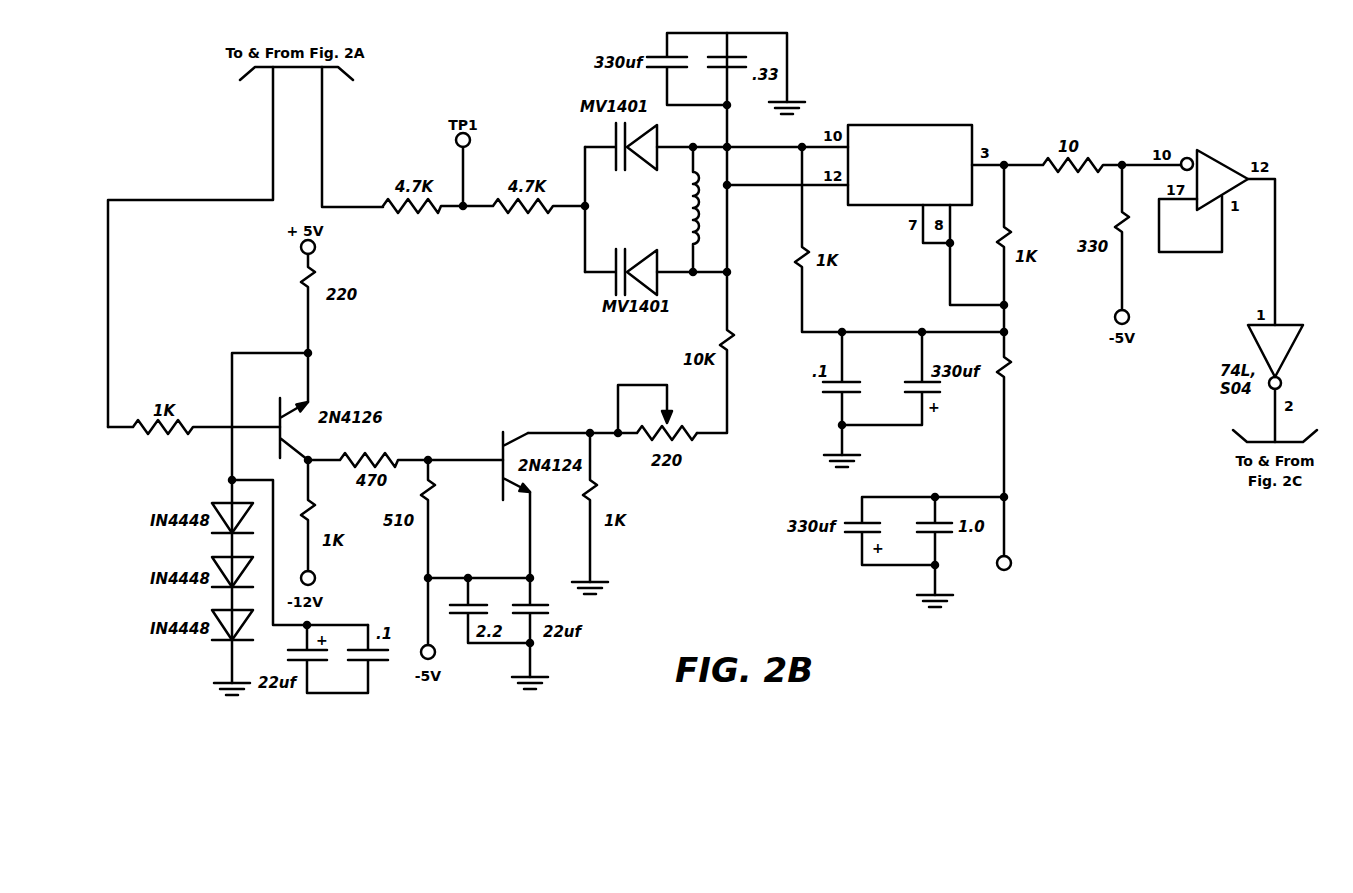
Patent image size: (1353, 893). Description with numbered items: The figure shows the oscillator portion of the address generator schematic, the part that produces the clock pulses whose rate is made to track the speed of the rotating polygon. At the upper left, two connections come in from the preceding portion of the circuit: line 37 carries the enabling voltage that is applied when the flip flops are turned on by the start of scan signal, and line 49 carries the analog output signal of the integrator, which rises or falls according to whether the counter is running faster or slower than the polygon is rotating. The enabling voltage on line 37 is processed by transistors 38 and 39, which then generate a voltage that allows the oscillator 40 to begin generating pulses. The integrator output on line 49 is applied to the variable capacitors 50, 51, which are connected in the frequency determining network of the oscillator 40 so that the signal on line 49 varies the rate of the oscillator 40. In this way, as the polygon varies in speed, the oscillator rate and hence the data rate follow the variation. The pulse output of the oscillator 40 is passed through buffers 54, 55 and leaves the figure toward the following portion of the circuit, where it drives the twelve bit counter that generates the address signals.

The line 37 is at (272, 155).
The line 49 is at (322, 163).
The transistor 38 is at (280, 416).
The transistor 39 is at (503, 443).
The oscillator 40 is at (905, 125).
The variable capacitor 50 is at (643, 250).
The variable capacitor 51 is at (643, 163).
The buffer 54 is at (1216, 152).
The buffer 55 is at (1250, 342).